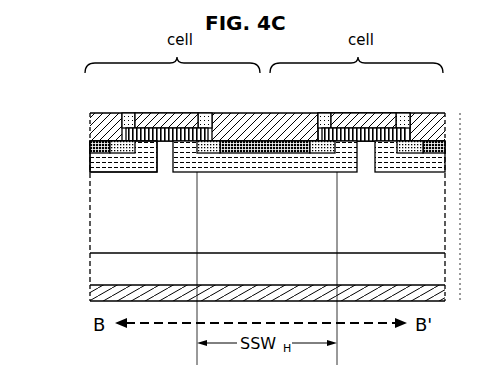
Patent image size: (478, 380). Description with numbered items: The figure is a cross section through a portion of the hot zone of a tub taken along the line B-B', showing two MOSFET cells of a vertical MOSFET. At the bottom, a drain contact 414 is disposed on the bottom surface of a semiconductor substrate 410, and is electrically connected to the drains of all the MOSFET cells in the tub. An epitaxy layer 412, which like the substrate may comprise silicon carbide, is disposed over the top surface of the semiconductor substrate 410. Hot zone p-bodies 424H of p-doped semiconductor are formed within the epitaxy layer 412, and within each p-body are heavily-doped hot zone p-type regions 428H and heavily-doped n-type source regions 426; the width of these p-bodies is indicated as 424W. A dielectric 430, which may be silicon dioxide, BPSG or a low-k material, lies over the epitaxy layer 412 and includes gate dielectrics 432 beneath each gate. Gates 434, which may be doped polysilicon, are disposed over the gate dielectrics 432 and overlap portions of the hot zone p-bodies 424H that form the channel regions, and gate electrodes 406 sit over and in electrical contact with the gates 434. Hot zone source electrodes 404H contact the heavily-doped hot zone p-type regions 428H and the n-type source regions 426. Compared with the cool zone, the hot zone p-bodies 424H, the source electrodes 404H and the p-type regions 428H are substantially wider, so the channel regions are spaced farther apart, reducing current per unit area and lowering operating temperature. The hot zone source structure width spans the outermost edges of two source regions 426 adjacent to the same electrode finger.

The hot zone source electrode 404H is at (92, 127).
The dielectric 430 is at (407, 113).
The gate 434 is at (120, 113).
The gate electrode 406 is at (163, 116).
The gate dielectric 432 is at (183, 120).
The hot zone p-body 424H is at (205, 162).
The well width 424W is at (120, 162).
The heavily-doped hot zone p-type region 428H is at (92, 148).
The n-type source region 426 is at (115, 152).
The epitaxy layer 412 is at (283, 222).
The semiconductor substrate 410 is at (283, 282).
The drain contact 414 is at (130, 293).